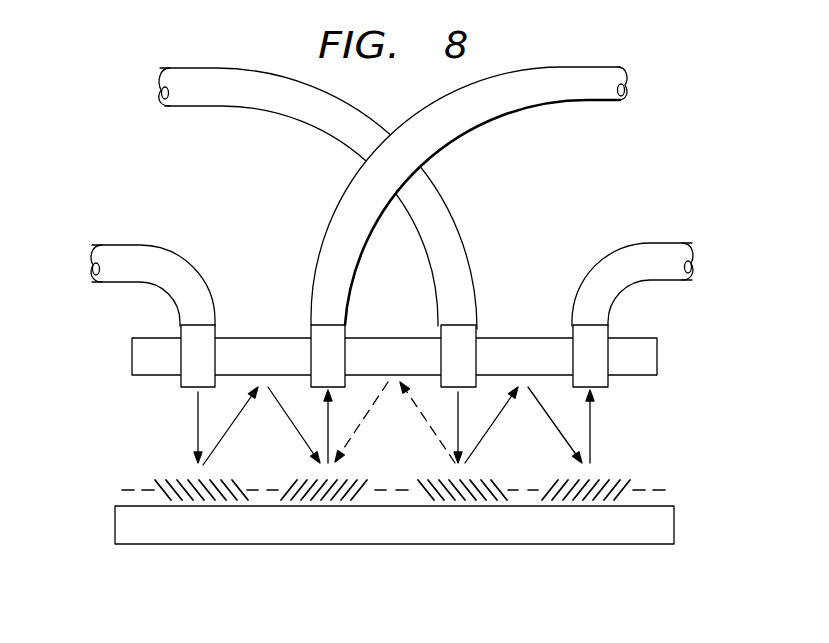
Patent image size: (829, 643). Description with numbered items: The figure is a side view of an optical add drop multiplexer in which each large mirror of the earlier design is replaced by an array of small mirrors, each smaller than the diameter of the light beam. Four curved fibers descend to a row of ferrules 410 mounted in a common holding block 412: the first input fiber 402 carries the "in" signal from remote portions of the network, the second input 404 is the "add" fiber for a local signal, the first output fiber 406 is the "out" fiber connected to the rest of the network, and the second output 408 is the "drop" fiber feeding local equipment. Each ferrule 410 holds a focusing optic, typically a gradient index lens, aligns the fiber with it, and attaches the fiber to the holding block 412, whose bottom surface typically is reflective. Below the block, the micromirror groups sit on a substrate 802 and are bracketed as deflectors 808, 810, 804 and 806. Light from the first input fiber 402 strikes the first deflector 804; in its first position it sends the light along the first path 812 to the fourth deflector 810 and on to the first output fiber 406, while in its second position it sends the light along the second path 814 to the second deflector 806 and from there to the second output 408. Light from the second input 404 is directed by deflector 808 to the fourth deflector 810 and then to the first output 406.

The first input fiber 402 is at (233, 70).
The second input fiber 404 is at (132, 248).
The first output fiber 406 is at (548, 70).
The second output fiber 408 is at (655, 247).
The ferrule 410 is at (185, 334).
The holding block 412 is at (130, 352).
The mirror array substrate 802 is at (676, 522).
The first deflector 804 is at (512, 556).
The second deflector 806 is at (630, 556).
The third deflector 808 is at (250, 556).
The fourth deflector 810 is at (368, 556).
The first path 812 is at (432, 440).
The second path 814 is at (480, 436).